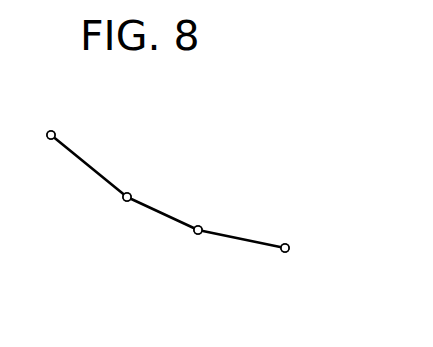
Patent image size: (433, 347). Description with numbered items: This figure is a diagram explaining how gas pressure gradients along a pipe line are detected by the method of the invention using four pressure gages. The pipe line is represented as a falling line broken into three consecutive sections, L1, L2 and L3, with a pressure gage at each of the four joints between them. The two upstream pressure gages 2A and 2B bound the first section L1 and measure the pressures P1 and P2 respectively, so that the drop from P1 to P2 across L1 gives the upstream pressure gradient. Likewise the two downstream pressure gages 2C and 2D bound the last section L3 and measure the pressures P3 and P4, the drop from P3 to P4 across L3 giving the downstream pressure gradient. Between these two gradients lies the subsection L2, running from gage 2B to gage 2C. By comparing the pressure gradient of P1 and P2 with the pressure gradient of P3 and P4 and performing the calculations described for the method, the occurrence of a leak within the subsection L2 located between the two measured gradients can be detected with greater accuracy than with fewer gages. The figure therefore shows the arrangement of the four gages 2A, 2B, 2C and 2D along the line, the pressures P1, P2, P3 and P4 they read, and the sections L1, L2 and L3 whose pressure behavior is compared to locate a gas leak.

The upstream pressure gage 2A is at (56, 134).
The upstream pressure gage 2B is at (132, 196).
The downstream pressure gage 2C is at (203, 229).
The downstream pressure gage 2D is at (290, 248).
The pressure P1 is at (60, 117).
The pressure P2 is at (137, 181).
The pressure P3 is at (207, 212).
The pressure P4 is at (284, 229).
The upstream section L1 is at (100, 179).
The subsection L2 is at (165, 220).
The downstream section L3 is at (252, 240).